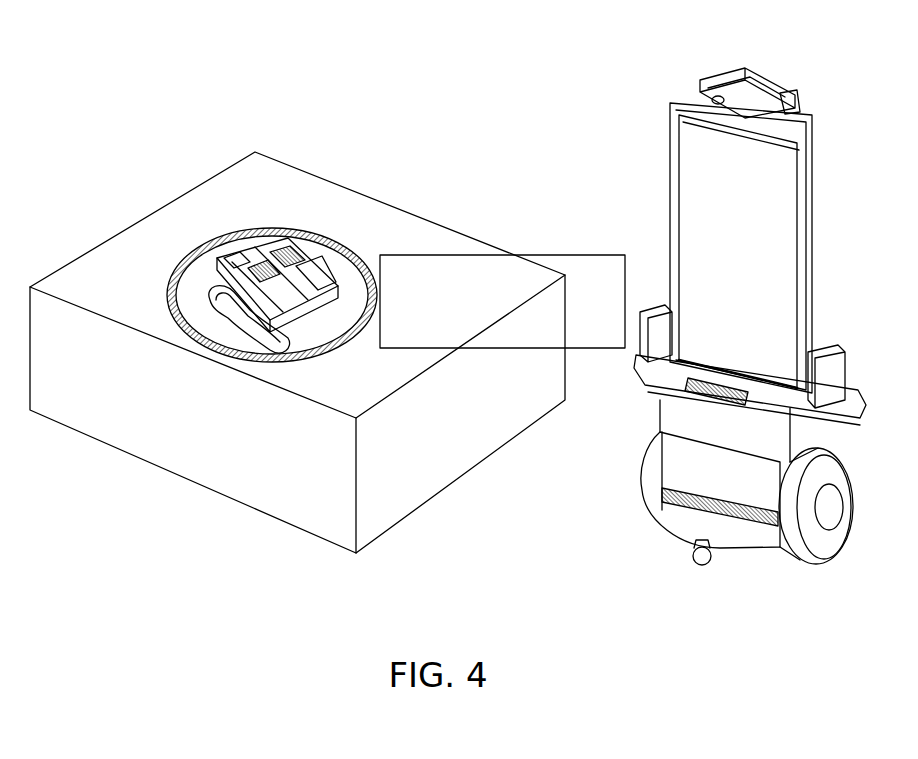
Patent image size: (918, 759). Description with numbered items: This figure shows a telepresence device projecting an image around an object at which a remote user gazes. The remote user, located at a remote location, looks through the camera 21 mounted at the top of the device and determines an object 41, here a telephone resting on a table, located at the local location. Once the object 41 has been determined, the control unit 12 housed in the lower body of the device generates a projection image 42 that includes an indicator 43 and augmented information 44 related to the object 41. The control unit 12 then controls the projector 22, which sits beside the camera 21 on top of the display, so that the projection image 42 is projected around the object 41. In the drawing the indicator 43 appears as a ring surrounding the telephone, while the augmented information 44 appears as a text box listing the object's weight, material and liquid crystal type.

The control unit 12 is at (683, 472).
The camera 21 is at (705, 90).
The projector 22 is at (728, 82).
The object 41 is at (265, 236).
The projection image 42 is at (458, 105).
The indicator 43 is at (322, 230).
The augmented information 44 is at (402, 252).